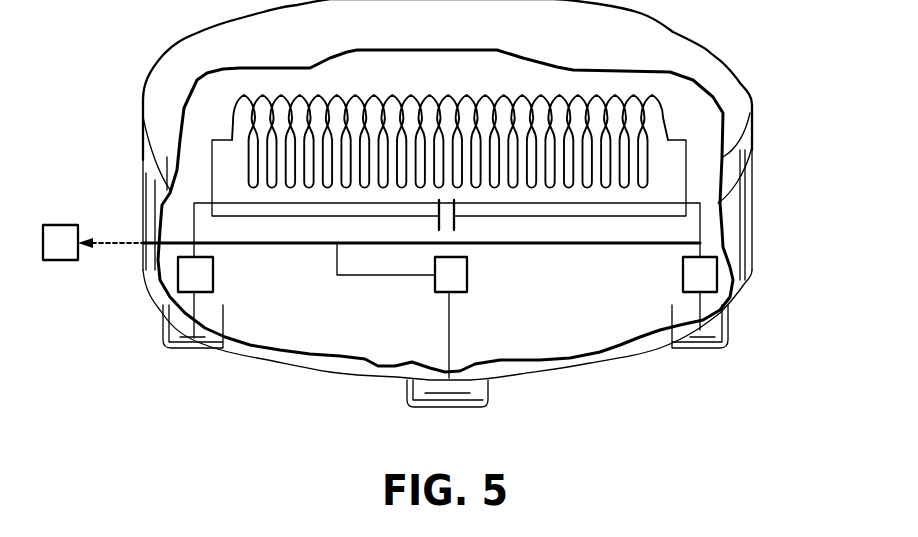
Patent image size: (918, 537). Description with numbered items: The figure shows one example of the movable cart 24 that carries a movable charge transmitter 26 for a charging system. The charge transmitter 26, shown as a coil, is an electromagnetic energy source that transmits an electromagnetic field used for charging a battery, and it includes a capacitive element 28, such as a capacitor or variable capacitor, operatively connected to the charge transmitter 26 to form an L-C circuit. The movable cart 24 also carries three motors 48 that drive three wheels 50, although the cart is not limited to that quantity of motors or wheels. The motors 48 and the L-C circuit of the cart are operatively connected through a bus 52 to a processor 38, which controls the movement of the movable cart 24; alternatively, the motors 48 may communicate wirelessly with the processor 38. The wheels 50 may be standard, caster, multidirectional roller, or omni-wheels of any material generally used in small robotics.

The movable cart 24 is at (808, 139).
The charge transmitter 26 is at (753, 142).
The capacitive element 28 is at (484, 214).
The processor 38 is at (43, 247).
The motor 48 is at (213, 272).
The wheel 50 is at (193, 348).
The bus 52 is at (537, 244).